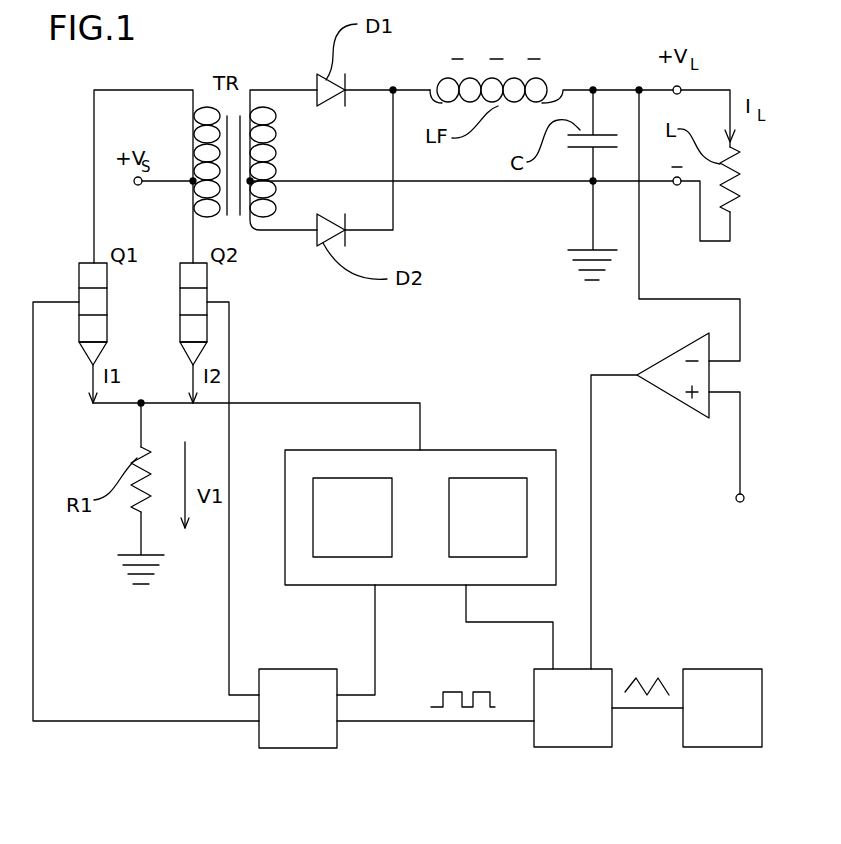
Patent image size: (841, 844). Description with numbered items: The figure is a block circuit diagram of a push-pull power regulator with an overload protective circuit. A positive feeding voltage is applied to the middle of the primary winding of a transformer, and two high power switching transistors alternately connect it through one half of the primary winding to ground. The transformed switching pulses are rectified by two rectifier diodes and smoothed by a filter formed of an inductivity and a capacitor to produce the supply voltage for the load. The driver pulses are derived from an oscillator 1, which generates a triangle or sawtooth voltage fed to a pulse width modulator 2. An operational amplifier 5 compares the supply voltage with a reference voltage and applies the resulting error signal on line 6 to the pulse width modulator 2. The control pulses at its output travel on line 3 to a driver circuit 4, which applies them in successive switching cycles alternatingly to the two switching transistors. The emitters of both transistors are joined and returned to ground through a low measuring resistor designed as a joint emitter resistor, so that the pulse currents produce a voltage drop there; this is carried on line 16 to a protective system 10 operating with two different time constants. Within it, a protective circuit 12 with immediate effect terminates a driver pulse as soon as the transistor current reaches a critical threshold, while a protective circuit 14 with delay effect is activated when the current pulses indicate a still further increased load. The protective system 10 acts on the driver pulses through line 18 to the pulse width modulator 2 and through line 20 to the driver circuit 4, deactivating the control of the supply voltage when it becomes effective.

The oscillator 1 is at (718, 682).
The pulse width modulator 2 is at (552, 733).
The line 3 is at (386, 722).
The driver circuit 4 is at (300, 742).
The operational amplifier 5 is at (672, 370).
The line 6 is at (591, 434).
The protective system 10 is at (467, 450).
The protective circuit with immediate effect 12 is at (332, 533).
The protective circuit with delay effect 14 is at (525, 521).
The line 16 is at (291, 403).
The line 18 is at (518, 622).
The line 20 is at (373, 612).